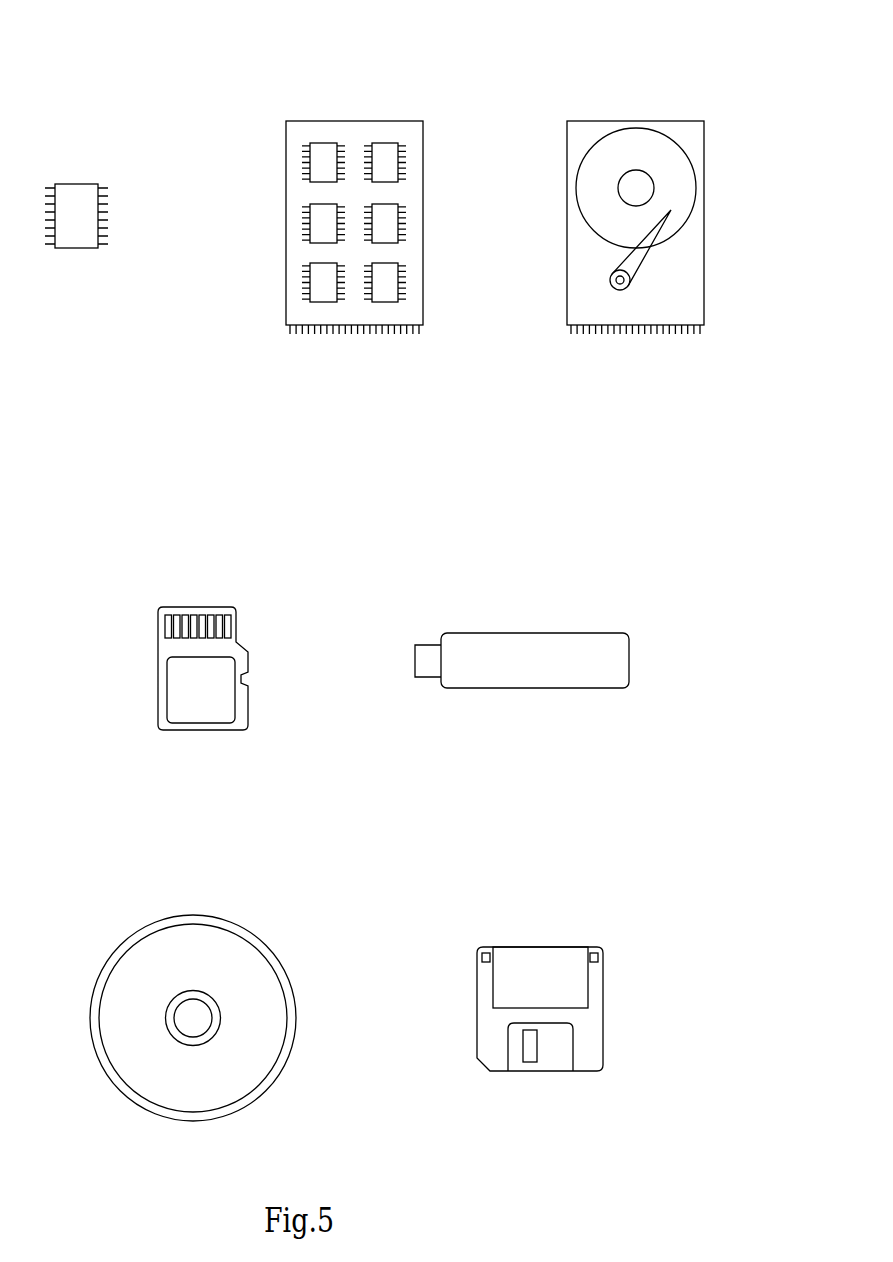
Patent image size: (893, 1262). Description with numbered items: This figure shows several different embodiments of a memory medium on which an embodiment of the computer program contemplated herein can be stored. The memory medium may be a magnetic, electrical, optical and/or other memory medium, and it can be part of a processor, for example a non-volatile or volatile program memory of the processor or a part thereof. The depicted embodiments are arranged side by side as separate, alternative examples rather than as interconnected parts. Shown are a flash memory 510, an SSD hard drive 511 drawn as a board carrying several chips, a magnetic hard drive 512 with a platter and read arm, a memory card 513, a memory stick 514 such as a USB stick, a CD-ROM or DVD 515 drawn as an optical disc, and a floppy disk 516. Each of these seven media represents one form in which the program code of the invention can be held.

The flash memory 510 is at (107, 137).
The SSD hard drive 511 is at (430, 73).
The magnetic hard drive 512 is at (714, 74).
The memory card 513 is at (247, 563).
The memory stick 514 is at (611, 584).
The CD-ROM or DVD 515 is at (284, 900).
The floppy disk 516 is at (607, 900).